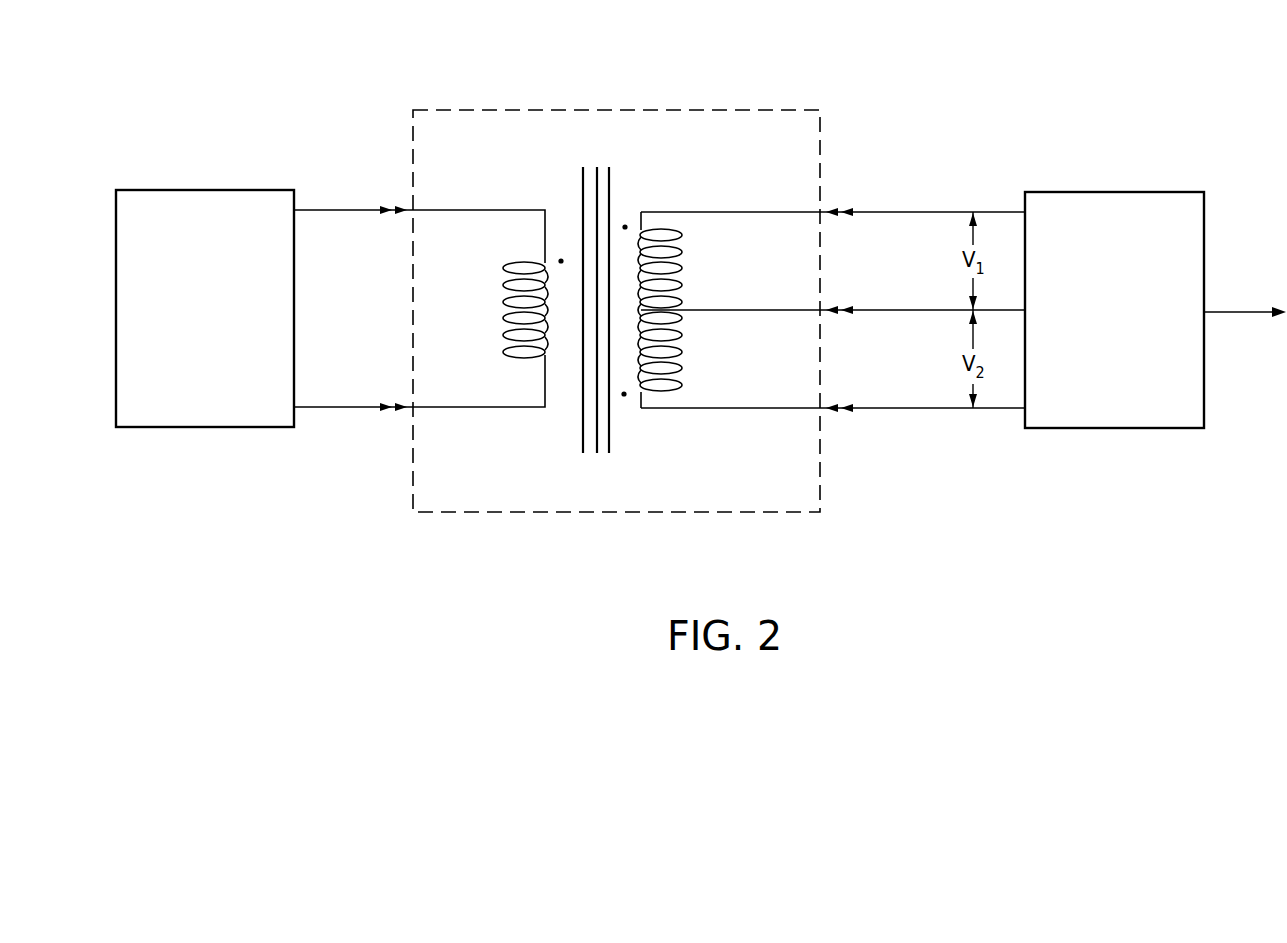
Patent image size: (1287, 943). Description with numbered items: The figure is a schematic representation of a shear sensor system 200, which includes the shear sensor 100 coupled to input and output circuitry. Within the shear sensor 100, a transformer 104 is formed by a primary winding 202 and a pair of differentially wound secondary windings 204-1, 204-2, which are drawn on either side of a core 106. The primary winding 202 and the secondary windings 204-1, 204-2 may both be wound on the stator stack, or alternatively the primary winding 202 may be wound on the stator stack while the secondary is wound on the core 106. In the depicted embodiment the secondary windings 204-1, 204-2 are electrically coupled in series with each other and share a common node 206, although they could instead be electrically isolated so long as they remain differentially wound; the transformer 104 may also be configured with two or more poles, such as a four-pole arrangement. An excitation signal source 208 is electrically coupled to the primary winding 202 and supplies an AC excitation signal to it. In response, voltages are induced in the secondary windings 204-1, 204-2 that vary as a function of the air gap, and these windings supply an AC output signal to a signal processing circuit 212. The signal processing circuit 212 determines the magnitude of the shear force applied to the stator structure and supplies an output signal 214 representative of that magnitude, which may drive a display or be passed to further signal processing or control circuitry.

The shear sensor 100 is at (481, 110).
The transformer 104 is at (645, 198).
The core 106 is at (608, 435).
The shear sensor system 200 is at (930, 80).
The primary winding 202 is at (503, 318).
The secondary winding 204-1 is at (682, 250).
The secondary winding 204-2 is at (682, 367).
The common node 206 is at (795, 309).
The excitation signal source 208 is at (200, 190).
The signal processing circuit 212 is at (1125, 192).
The output signal 214 is at (1235, 311).